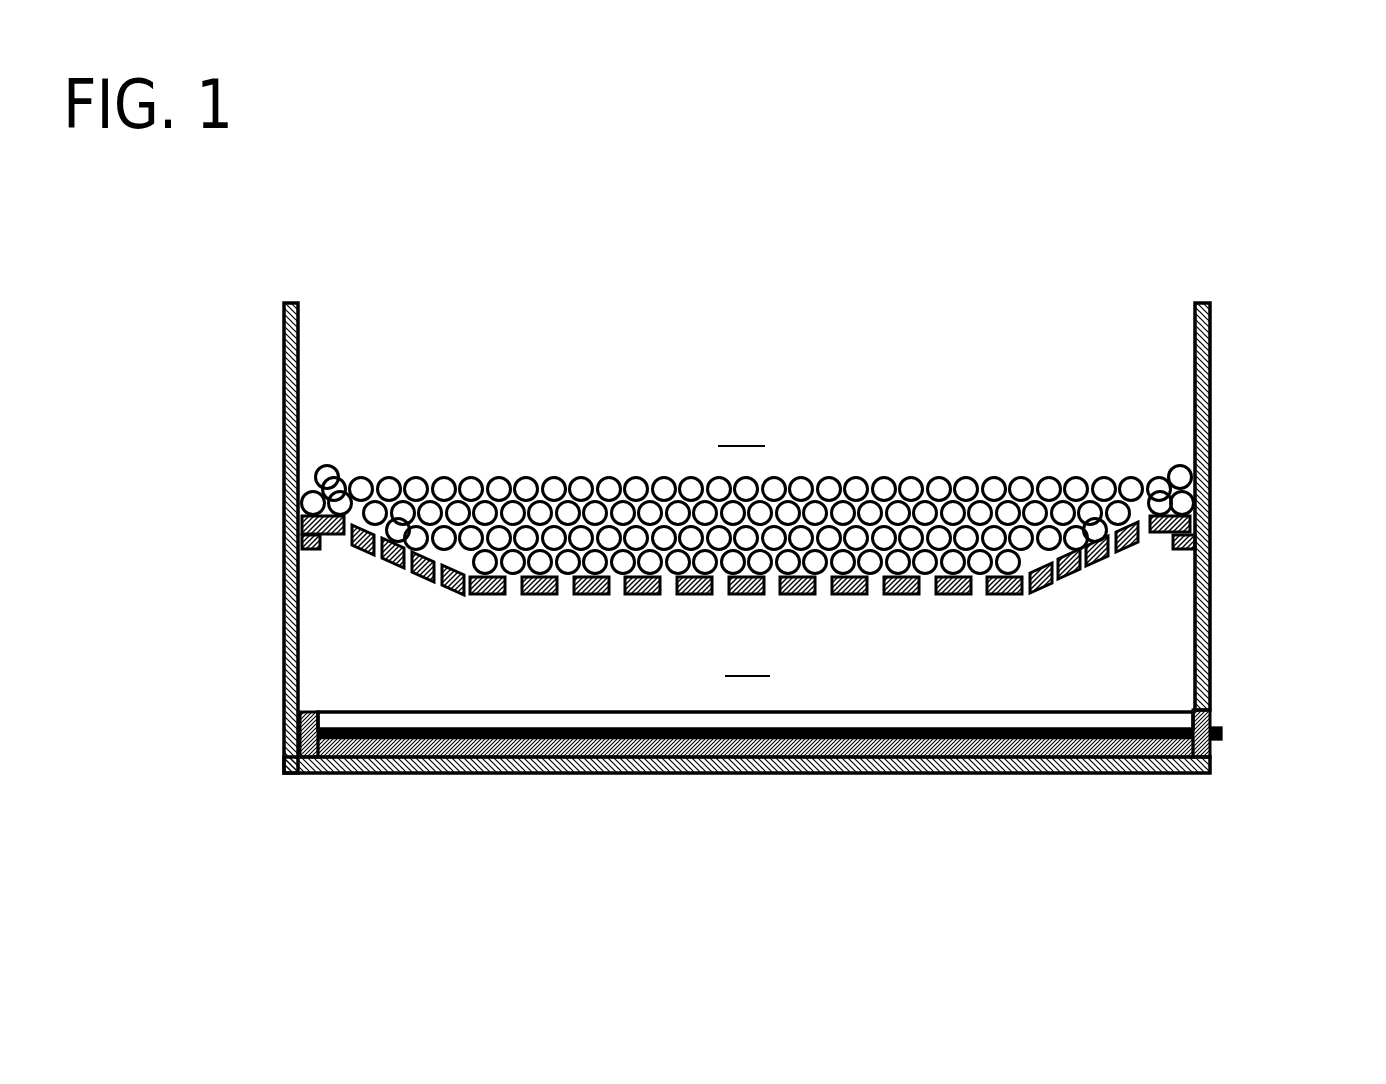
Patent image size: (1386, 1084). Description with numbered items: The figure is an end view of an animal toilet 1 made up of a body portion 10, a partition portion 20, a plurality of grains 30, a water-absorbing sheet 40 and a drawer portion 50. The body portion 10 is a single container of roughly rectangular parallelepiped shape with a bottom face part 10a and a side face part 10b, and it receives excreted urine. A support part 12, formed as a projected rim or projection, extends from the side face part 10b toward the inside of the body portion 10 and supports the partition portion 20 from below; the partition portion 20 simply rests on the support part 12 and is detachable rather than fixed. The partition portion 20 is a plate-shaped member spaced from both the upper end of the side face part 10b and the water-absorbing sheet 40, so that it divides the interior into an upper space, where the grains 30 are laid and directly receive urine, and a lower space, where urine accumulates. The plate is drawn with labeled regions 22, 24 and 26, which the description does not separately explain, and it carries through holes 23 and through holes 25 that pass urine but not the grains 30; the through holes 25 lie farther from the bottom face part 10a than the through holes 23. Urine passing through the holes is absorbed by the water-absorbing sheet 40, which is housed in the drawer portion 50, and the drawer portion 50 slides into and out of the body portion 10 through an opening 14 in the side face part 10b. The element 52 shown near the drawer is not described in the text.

The animal toilet 1 is at (1020, 232).
The body portion 10 is at (699, 616).
The bottom face part 10a is at (765, 773).
The side face part 10b is at (285, 440).
The support part 12 is at (1186, 550).
The opening 14 is at (1213, 708).
The partition portion 20 is at (746, 514).
The flat portion of substrate 22 is at (697, 578).
The through hole 23 is at (617, 592).
The inclined portion of substrate 24 is at (392, 522).
The through hole 25 is at (410, 557).
The inclined portion of substrate 26 is at (1180, 520).
The grains 30 is at (858, 490).
The water-absorbing sheet 40 is at (966, 722).
The drawer portion 50 is at (535, 775).
The terminal 52 is at (1222, 733).